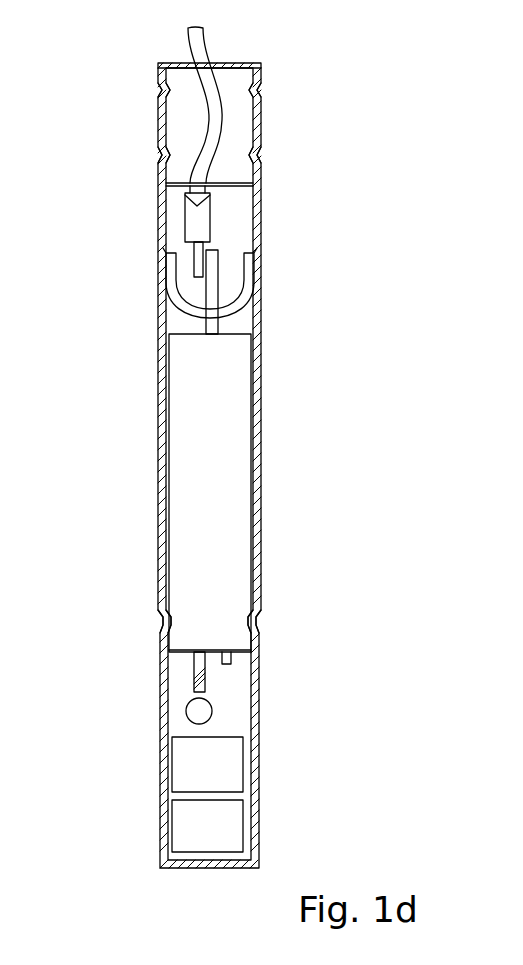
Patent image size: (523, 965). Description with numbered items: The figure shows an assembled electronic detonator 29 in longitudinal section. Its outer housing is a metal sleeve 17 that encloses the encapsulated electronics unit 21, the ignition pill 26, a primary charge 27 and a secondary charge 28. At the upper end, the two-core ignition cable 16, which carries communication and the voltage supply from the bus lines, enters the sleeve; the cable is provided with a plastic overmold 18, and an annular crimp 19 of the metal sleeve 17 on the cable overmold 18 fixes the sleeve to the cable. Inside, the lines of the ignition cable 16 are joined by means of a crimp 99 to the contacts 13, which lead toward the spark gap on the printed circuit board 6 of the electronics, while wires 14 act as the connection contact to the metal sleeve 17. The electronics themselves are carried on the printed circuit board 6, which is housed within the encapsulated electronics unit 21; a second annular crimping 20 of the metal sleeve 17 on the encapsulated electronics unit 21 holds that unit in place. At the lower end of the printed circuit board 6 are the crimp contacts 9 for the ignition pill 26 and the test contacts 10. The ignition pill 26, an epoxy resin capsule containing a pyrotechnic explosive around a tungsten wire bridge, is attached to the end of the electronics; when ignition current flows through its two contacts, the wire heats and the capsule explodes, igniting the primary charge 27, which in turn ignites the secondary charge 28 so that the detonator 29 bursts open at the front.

The printed circuit board 6 is at (214, 323).
The crimp contacts 9 is at (196, 660).
The test contacts 10 is at (230, 660).
The crimp contacts for bus cable 13 is at (197, 248).
The connection contact to metal housing 14 is at (170, 275).
The two-core ignition cable 16 is at (207, 39).
The metal sleeve 17 is at (158, 545).
The plastic overmold of the cable 18 is at (187, 117).
The annular crimp of the metal sleeve on the cable overmold 19 is at (262, 153).
The annular crimping of the metal sleeve on the encapsulated electronics unit 20 is at (262, 620).
The encapsulated electronics unit 21 is at (232, 440).
The ignition pill 26 is at (196, 712).
The primary charge 27 is at (228, 768).
The secondary charge 28 is at (215, 830).
The electronic detonator 29 is at (316, 492).
The crimp 99 is at (205, 213).